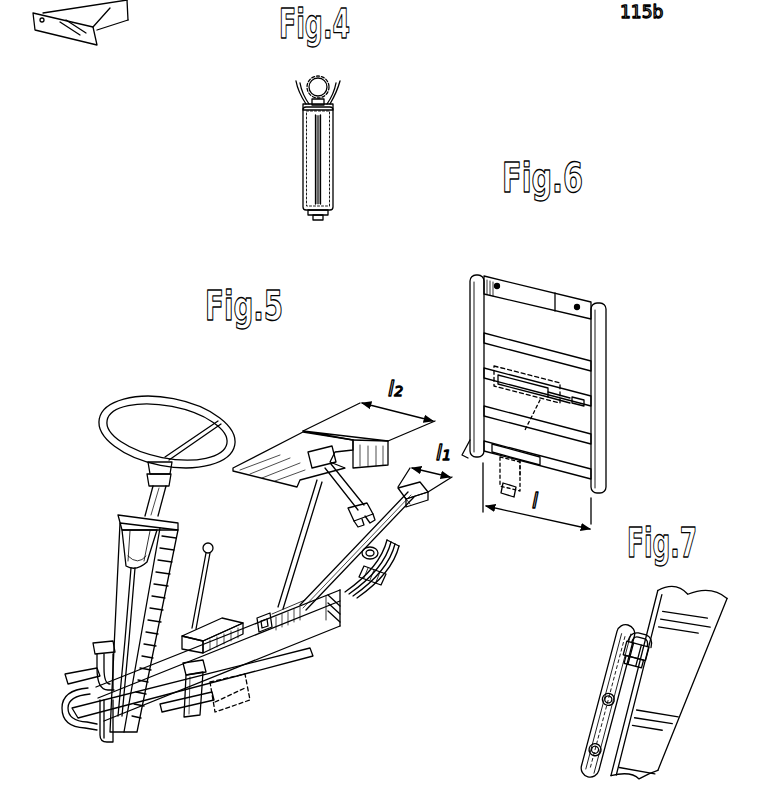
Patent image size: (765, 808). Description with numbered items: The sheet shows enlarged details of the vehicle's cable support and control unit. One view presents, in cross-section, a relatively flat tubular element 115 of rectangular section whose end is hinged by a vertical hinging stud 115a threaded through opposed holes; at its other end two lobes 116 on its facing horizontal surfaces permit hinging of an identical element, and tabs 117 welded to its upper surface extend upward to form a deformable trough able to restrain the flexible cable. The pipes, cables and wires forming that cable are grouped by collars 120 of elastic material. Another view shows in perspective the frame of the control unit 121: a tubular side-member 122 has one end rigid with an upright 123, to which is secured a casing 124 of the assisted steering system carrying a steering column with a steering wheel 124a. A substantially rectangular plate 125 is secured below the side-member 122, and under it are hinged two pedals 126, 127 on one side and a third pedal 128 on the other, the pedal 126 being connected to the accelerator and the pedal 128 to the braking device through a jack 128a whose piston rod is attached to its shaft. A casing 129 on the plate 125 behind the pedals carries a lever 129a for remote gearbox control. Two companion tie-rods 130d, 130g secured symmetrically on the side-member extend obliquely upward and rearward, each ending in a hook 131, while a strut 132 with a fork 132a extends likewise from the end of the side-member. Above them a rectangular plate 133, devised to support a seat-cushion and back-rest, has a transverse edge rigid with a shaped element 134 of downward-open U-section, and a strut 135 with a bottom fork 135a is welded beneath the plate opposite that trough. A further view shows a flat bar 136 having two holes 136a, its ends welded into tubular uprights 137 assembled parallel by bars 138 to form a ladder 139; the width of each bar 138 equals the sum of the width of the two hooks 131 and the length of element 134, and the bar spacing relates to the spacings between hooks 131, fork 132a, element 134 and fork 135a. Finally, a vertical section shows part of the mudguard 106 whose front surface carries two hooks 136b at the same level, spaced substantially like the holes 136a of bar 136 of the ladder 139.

In FIG. 7, the mudguard 106 is at (672, 690).
In FIG. 4, the tubular element 115 is at (334, 177).
In FIG. 4, the hinging stud 115a is at (316, 160).
In FIG. 4, the lobes 116 is at (303, 107).
In FIG. 4, the tabs 117 is at (341, 86).
In FIG. 5, the collars 120 is at (383, 582).
In FIG. 5, the control unit 121 is at (250, 450).
In FIG. 5, the tubular side-member 122 is at (305, 625).
In FIG. 5, the upright 123 is at (150, 598).
In FIG. 5, the casing 124 is at (125, 540).
In FIG. 5, the steering wheel 124a is at (130, 445).
In FIG. 5, the plate 125 is at (285, 668).
In FIG. 5, the pedal 126 is at (93, 656).
In FIG. 5, the pedal 127 is at (108, 646).
In FIG. 5, the pedal 128 is at (180, 718).
In FIG. 5, the jack 128a is at (232, 716).
In FIG. 5, the casing 129 is at (238, 618).
In FIG. 5, the lever 129a is at (207, 543).
In FIG. 5, the tie-rod 130d is at (290, 556).
In FIG. 5, the tie-rod 130g is at (410, 530).
In FIG. 5, the hook 131 is at (428, 497).
In FIG. 5, the strut 132 is at (358, 605).
In FIG. 5, the fork 132a is at (380, 552).
In FIG. 5, the rectangular plate 133 is at (275, 455).
In FIG. 5, the shaped element 134 is at (310, 430).
In FIG. 5, the strut 135 is at (350, 490).
In FIG. 5, the fork 135a is at (358, 524).
In FIG. 6, the flat bar 136 is at (578, 304).
In FIG. 7, the flat bar 136 is at (628, 664).
In FIG. 6, the holes 136a is at (498, 284).
In FIG. 7, the hooks 136b is at (632, 640).
In FIG. 6, the tubular uprights 137 is at (470, 300).
In FIG. 7, the tubular uprights 137 is at (602, 722).
In FIG. 6, the bars 138 is at (575, 432).
In FIG. 7, the bars 138 is at (592, 754).
In FIG. 6, the ladder 139 is at (610, 453).